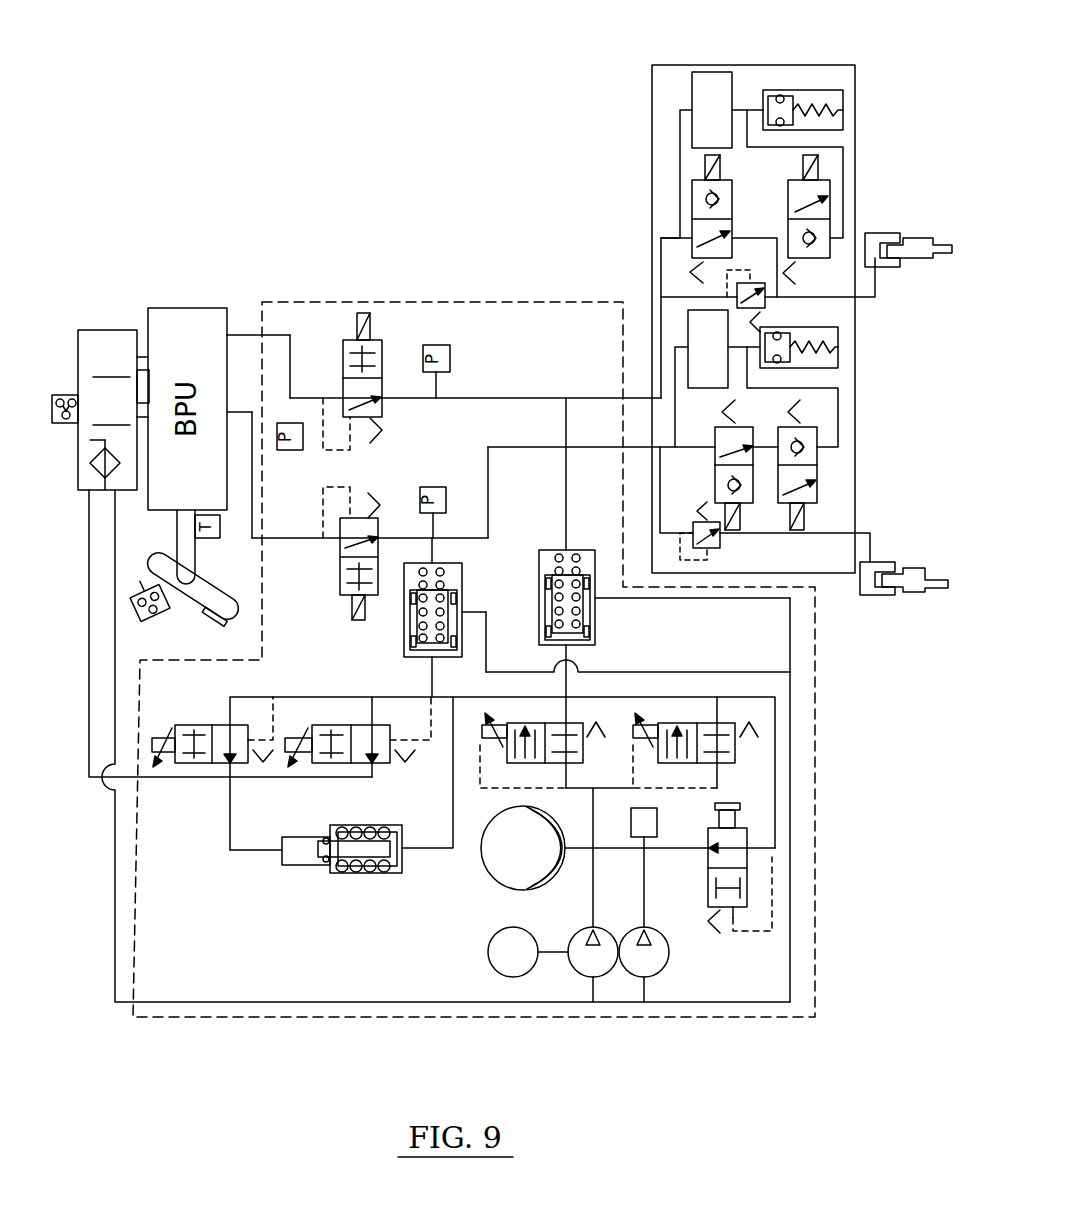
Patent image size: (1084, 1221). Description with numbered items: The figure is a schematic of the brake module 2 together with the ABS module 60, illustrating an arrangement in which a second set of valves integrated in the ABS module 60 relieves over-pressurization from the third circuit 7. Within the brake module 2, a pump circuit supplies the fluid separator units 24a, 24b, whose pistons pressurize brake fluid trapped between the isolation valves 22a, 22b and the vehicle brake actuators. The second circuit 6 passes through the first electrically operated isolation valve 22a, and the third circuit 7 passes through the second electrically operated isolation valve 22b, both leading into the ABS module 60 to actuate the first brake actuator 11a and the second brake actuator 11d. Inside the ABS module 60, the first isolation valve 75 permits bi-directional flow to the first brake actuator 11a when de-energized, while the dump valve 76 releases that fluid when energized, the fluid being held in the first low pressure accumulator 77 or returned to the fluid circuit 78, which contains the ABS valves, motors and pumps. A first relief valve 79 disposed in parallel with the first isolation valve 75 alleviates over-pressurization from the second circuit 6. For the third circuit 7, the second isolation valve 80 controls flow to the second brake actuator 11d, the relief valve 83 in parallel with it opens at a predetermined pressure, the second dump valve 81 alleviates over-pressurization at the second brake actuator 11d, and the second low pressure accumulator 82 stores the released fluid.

The brake module 2 is at (817, 800).
The second circuit 6 is at (500, 482).
The third circuit 7 is at (554, 390).
The first brake actuator 11a is at (925, 595).
The second brake actuator 11d is at (925, 233).
The first electrically operated isolation valve 22a is at (346, 597).
The second electrically operated isolation valve 22b is at (343, 350).
The fluid separator unit 24a is at (404, 640).
The fluid separator unit 24b is at (597, 615).
The ABS module 60 is at (667, 65).
The first isolation valve 75 is at (715, 490).
The dump valve 76 is at (818, 487).
The first low pressure accumulator 77 is at (840, 350).
The fluid circuit 78 is at (688, 323).
The first relief valve 79 is at (722, 546).
The second isolation valve 80 is at (692, 213).
The second dump valve 81 is at (788, 236).
The second low pressure accumulator 82 is at (810, 90).
The relief valve 83 is at (766, 300).